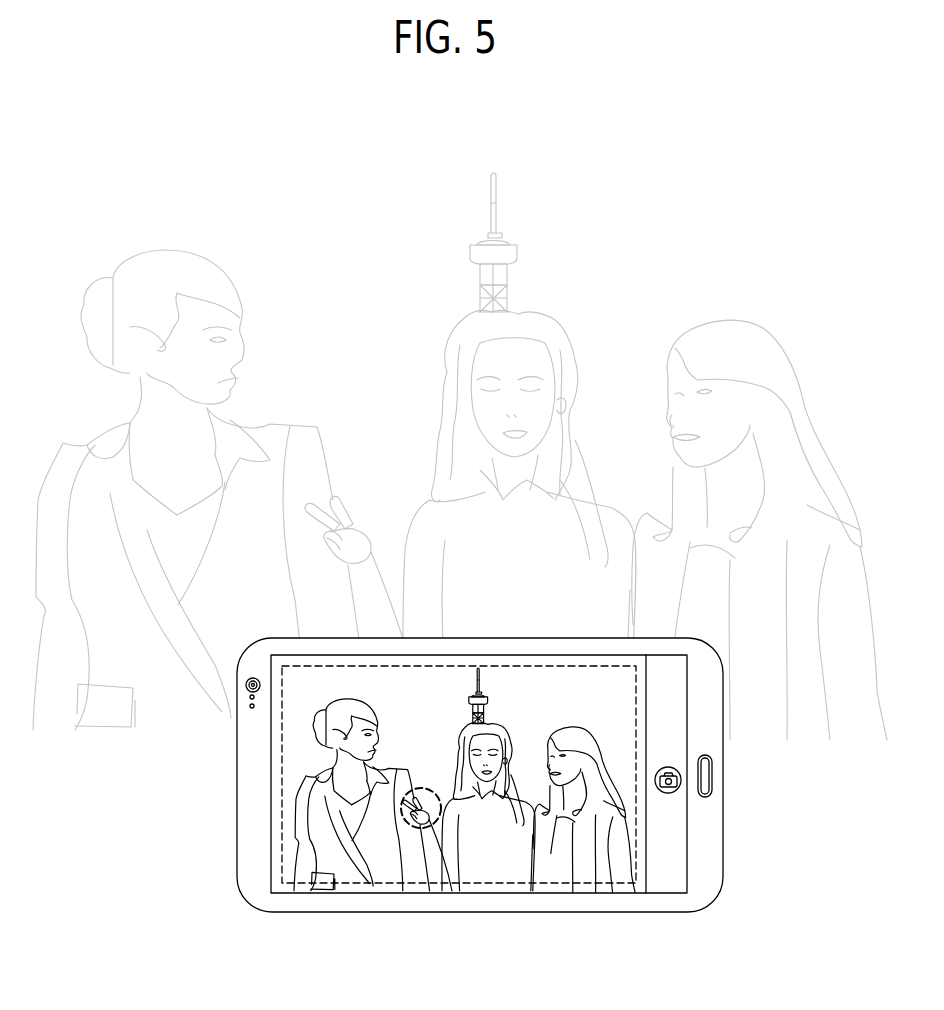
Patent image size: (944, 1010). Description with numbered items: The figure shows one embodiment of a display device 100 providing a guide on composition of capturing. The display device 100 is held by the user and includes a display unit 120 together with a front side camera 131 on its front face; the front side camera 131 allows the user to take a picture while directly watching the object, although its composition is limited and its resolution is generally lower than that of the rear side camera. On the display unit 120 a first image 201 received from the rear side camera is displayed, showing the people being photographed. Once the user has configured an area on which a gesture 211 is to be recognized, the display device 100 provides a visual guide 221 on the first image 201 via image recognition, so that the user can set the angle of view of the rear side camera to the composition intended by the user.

The display device 100 is at (446, 741).
The display unit 120 is at (598, 688).
The front side camera 131 is at (244, 685).
The first image 201 is at (340, 680).
The gesture 211 is at (422, 788).
The guide 221 is at (497, 884).